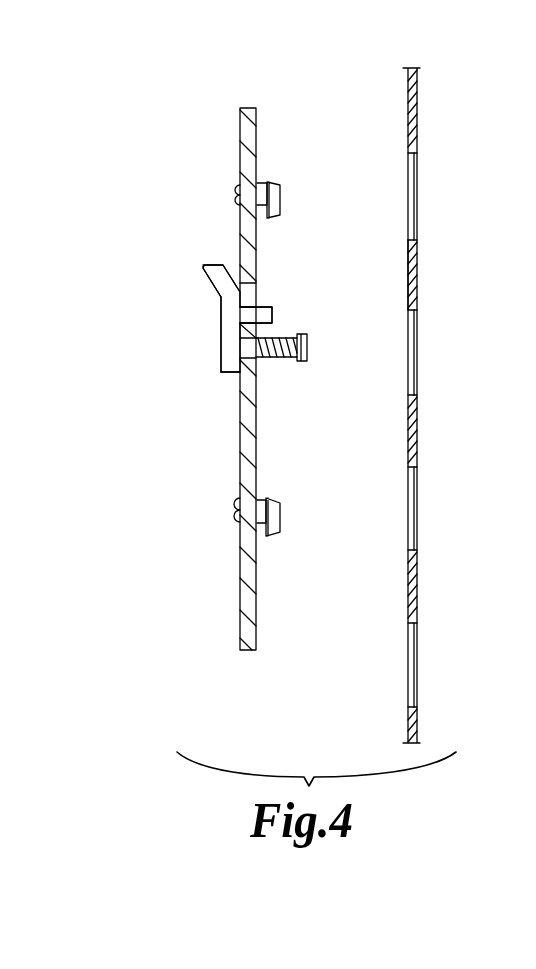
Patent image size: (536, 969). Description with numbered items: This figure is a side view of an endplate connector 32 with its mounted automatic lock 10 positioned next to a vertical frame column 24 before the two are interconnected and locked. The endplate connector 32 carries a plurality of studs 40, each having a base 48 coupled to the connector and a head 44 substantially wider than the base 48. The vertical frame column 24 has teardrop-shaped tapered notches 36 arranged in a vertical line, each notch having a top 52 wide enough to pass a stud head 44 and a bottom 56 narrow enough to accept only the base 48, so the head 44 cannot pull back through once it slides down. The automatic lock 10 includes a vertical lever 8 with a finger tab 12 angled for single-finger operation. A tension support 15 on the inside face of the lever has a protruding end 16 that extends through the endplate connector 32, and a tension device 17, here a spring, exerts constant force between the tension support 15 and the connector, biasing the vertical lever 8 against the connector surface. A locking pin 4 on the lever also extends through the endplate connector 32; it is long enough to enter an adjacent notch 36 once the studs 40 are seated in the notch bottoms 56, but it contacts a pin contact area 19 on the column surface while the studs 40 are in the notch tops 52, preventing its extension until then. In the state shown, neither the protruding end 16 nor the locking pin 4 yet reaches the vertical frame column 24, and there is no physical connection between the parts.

The locking pin 4 is at (267, 311).
The vertical lever 8 is at (231, 335).
The automatic lock 10 is at (210, 364).
The finger tab 12 is at (210, 268).
The tension support 15 is at (243, 347).
The protruding end 16 is at (288, 358).
The tension device 17 is at (291, 341).
The pin contact area 19 is at (407, 268).
The vertical frame column 24 is at (410, 66).
The endplate connector 32 is at (247, 108).
The tapered notch 36 is at (423, 189).
The stud 40 is at (286, 187).
The head 44 is at (277, 207).
The base 48 is at (258, 182).
The top 52 is at (408, 162).
The bottom 56 is at (413, 223).